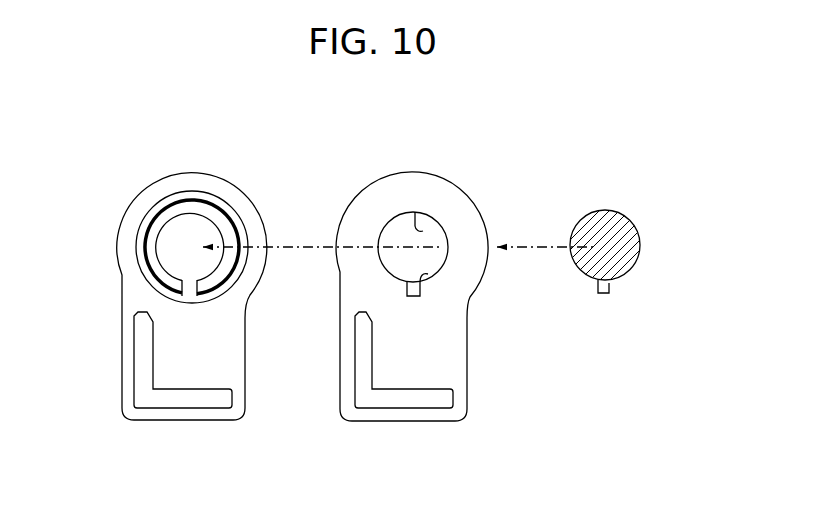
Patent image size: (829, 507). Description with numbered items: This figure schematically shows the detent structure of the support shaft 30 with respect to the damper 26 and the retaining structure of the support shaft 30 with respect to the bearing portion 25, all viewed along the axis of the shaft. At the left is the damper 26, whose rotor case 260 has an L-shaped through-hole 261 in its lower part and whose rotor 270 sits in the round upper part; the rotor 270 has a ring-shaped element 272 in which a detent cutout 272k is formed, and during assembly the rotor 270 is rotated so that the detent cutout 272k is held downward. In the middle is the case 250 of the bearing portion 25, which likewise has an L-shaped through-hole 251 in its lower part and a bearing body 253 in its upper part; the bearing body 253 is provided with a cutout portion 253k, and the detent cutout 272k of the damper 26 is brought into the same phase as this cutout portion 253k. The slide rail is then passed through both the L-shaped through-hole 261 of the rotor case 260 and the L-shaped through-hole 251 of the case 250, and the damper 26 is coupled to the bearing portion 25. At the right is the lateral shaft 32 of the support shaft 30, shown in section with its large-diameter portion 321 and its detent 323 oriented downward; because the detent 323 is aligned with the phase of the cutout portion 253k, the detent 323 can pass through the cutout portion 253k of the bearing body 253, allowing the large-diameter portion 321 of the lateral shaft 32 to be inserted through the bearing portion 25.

The damper 26 is at (219, 166).
The rotor case 260 is at (118, 290).
The rotor 270 is at (243, 217).
The elastic ring 272 is at (207, 202).
The detent cutout 272k is at (188, 282).
The L-shaped through-hole 261 is at (183, 400).
The bearing portion 25 is at (444, 168).
The case 250 is at (448, 348).
The bearing body 253 is at (423, 231).
The cutout portion 253k is at (428, 274).
The L-shaped through-hole 251 is at (423, 403).
The support shaft 30 is at (639, 198).
The lateral shaft 32 is at (611, 206).
The large-diameter portion 321 is at (633, 268).
The detent 323 is at (603, 294).